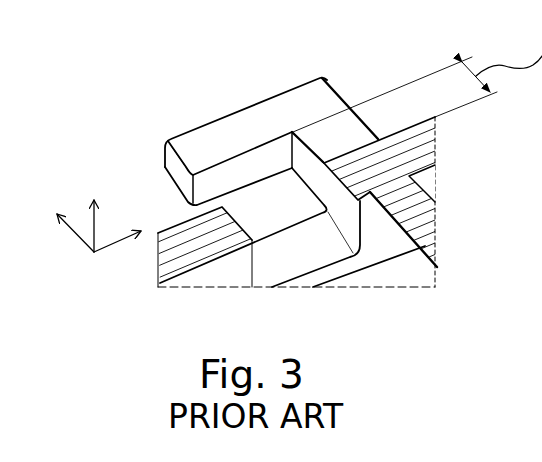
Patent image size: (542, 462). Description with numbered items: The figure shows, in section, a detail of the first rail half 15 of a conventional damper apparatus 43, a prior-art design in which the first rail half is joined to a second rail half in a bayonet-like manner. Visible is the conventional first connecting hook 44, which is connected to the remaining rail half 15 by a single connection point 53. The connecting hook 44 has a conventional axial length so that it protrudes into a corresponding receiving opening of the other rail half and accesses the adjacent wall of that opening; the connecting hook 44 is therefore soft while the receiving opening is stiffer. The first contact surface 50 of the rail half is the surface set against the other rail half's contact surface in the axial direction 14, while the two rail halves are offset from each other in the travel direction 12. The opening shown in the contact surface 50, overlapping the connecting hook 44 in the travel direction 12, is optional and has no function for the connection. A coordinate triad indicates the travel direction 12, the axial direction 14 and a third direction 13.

The first rail half 15 is at (247, 110).
The conventional damper apparatus 43 is at (176, 60).
The first connecting hook 44 is at (341, 122).
The first contact surface 50 is at (181, 213).
The connection point 53 is at (316, 195).
The travel direction 12 is at (118, 245).
The vertical direction 13 is at (100, 200).
The axial direction 14 is at (82, 243).